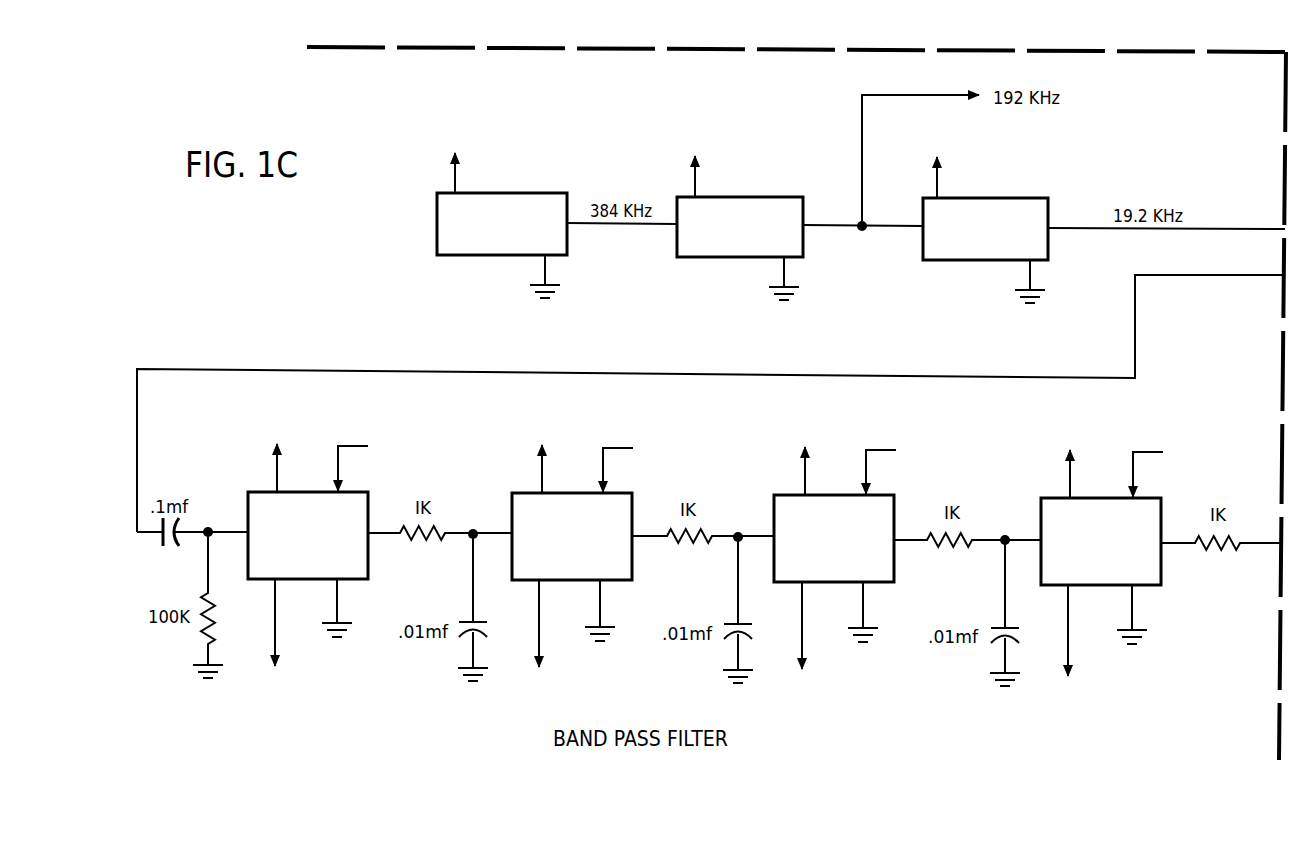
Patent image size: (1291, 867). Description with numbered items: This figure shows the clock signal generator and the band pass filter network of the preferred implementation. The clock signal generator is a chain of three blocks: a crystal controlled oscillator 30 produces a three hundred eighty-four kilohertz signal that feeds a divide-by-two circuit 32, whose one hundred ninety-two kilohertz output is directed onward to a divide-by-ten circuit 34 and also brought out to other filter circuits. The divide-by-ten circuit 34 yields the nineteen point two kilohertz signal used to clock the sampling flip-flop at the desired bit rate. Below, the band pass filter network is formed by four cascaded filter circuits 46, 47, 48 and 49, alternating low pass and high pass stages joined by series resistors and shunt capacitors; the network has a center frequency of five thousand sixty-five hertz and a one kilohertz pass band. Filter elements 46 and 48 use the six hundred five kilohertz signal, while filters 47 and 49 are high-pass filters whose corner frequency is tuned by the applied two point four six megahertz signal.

The crystal controlled oscillator 30 is at (530, 198).
The divide by 2 circuit 32 is at (765, 200).
The divide by 10 circuit 34 is at (1010, 201).
The band pass filter circuit 46 is at (258, 500).
The high-pass filter 47 is at (523, 500).
The band pass filter circuit 48 is at (786, 502).
The high-pass filter 49 is at (1051, 505).